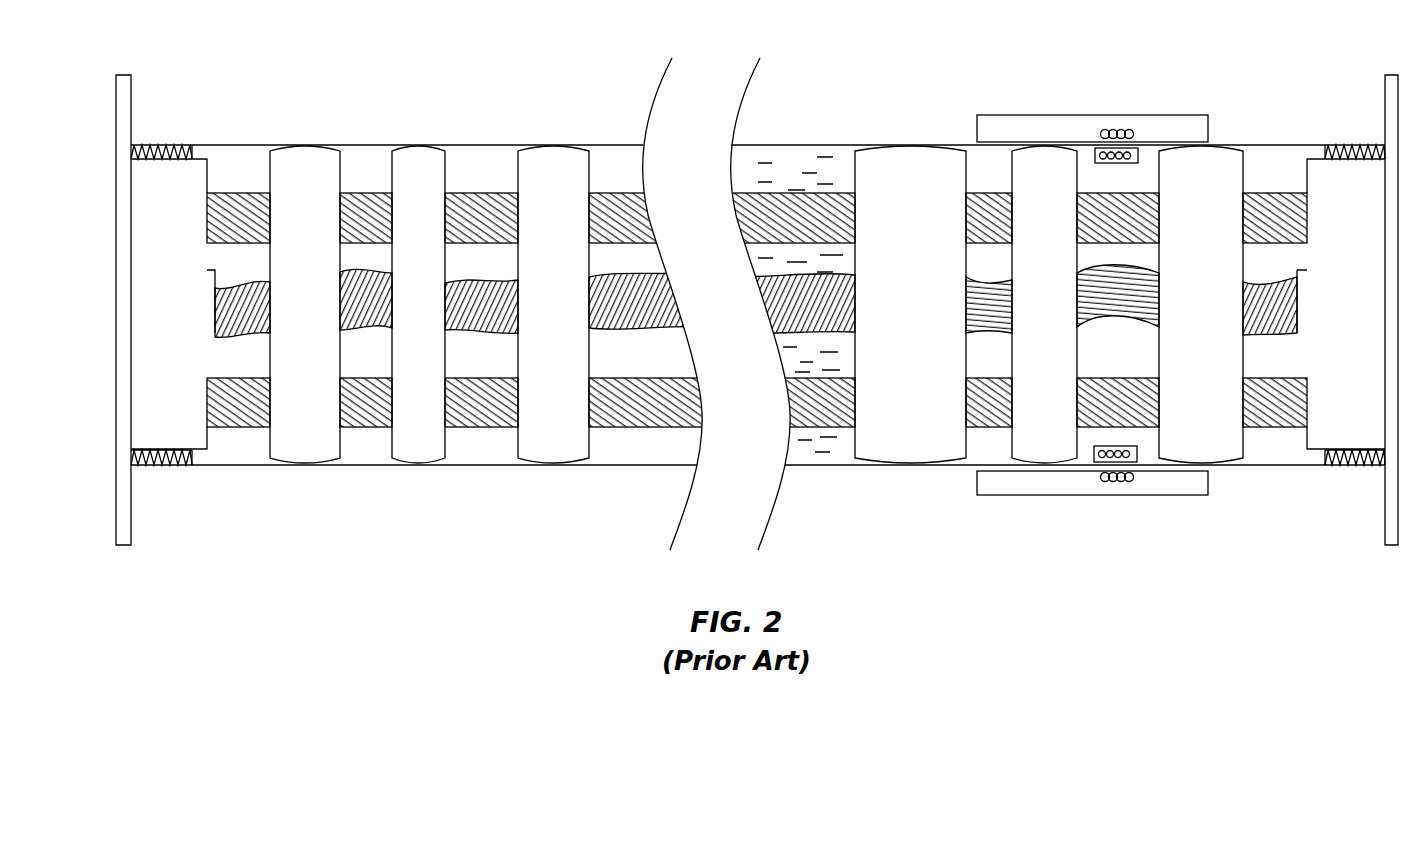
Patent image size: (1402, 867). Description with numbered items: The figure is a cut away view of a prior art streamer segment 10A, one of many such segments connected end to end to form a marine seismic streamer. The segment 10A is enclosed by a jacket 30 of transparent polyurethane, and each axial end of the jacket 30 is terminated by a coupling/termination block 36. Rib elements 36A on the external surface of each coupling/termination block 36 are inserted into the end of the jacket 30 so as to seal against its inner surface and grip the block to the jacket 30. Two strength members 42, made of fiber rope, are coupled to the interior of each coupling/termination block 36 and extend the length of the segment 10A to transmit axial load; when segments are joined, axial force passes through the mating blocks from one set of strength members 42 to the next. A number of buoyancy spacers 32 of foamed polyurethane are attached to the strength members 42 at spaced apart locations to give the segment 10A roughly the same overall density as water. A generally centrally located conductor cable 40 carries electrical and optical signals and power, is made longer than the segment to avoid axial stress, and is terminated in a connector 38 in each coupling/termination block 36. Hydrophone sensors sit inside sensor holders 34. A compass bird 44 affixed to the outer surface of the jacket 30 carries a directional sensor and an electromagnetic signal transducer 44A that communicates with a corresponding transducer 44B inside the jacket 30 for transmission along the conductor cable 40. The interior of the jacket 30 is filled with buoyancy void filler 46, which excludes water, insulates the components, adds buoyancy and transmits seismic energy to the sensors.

The streamer segment 10A is at (590, 40).
The jacket 30 is at (490, 140).
The buoyancy spacers 32 is at (300, 153).
The sensor holders 34 is at (552, 152).
The coupling/termination block 36 is at (131, 418).
The rib elements 36A is at (165, 145).
The connector 38 is at (212, 268).
The conductor cable 40 is at (258, 337).
The strength members 42 is at (358, 172).
The compass bird 44 is at (1018, 115).
The electromagnetic signal transducer 44A is at (1113, 127).
The transducer 44B is at (1138, 155).
The buoyancy void filler 46 is at (808, 441).